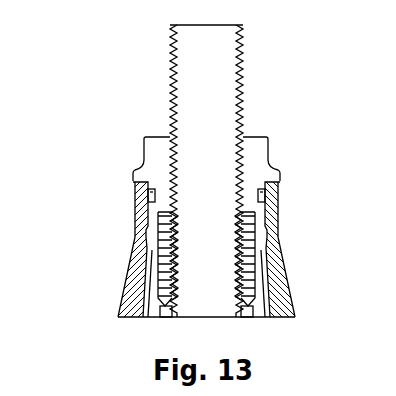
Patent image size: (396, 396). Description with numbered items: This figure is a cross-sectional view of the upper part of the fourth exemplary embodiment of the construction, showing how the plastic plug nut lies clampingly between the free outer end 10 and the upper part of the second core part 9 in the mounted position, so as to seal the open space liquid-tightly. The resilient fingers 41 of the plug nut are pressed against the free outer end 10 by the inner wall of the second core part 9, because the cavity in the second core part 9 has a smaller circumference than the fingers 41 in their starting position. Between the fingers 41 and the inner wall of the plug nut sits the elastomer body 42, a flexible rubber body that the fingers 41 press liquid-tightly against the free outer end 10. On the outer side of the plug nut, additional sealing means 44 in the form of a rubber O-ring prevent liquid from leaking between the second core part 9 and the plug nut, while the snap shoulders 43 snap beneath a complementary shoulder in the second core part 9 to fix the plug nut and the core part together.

The free outer end 10 is at (207, 115).
The second core part 9 is at (288, 283).
The sealing means 44 is at (137, 190).
The snap shoulders 43 is at (275, 238).
The resilient fingers 41 is at (148, 256).
The elastomer body 42 is at (146, 292).